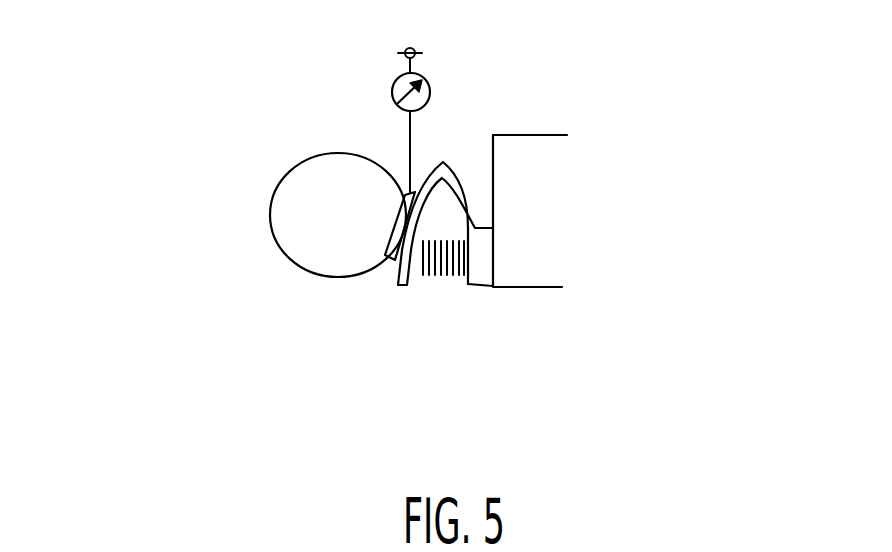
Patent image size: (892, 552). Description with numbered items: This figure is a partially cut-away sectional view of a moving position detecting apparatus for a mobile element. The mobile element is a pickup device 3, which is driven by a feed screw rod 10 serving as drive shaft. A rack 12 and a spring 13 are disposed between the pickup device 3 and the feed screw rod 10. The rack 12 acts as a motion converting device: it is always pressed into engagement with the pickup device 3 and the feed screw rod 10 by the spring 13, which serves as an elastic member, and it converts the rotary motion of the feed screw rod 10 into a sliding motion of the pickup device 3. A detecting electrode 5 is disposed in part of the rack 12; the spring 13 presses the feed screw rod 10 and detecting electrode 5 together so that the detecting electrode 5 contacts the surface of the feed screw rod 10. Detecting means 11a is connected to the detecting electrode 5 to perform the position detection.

The feed screw rod 10 is at (293, 183).
The first detecting electrode 5 is at (400, 231).
The detecting means 11a is at (430, 83).
The spring 13 is at (437, 276).
The rack 12 is at (481, 273).
The pickup device 3 is at (530, 270).